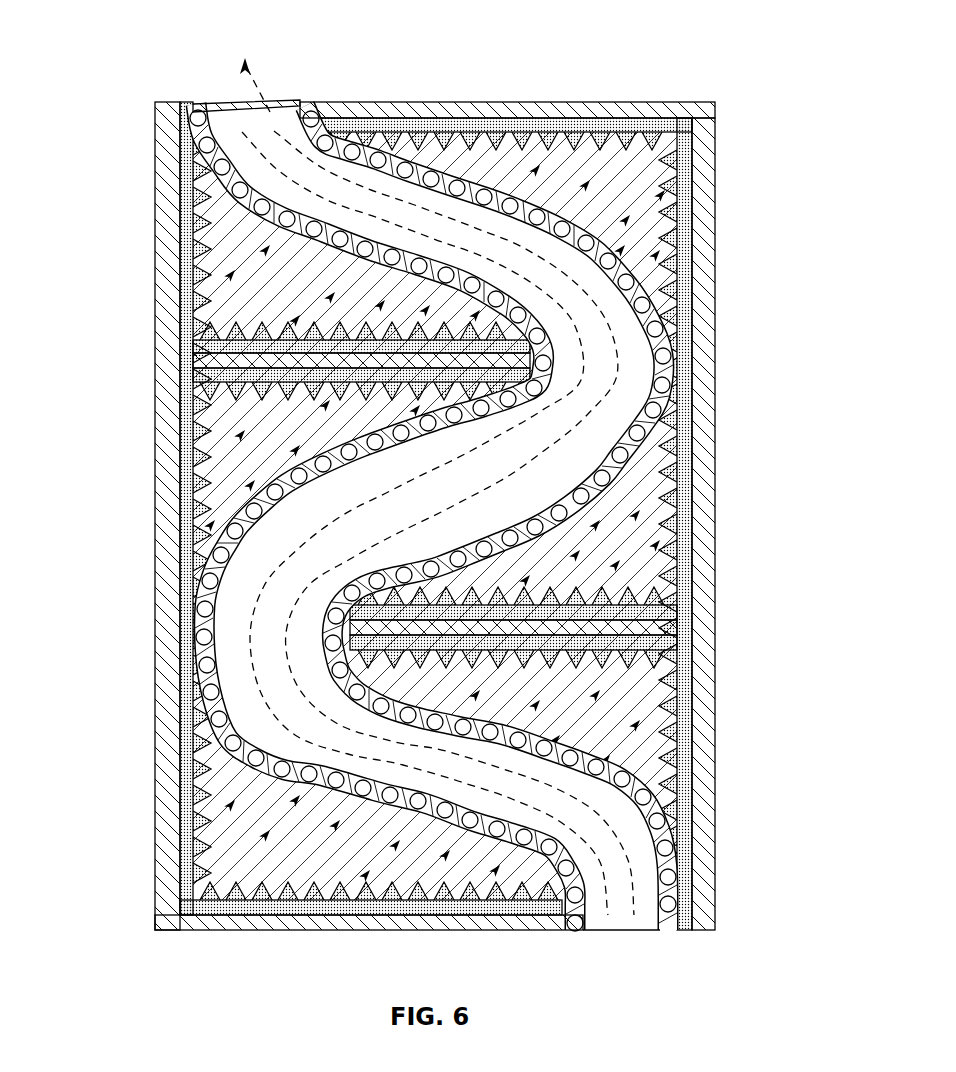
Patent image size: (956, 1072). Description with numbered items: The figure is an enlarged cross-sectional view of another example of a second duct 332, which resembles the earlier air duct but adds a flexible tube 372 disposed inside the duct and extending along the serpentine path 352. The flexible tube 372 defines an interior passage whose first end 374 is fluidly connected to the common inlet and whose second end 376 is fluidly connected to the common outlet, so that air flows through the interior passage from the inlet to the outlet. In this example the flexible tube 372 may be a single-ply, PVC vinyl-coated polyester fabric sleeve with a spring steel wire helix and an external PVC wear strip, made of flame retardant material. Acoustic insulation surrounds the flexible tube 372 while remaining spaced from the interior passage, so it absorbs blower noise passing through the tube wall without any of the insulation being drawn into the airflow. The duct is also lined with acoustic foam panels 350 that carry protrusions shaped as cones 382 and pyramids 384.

The second duct 332 is at (718, 102).
The acoustic foam panels 350 is at (200, 438).
The serpentine path 352 is at (620, 490).
The flexible tube 372 is at (650, 190).
The first end 374 is at (610, 930).
The second end 376 is at (283, 101).
The cones 382 is at (205, 775).
The pyramids 384 is at (333, 878).